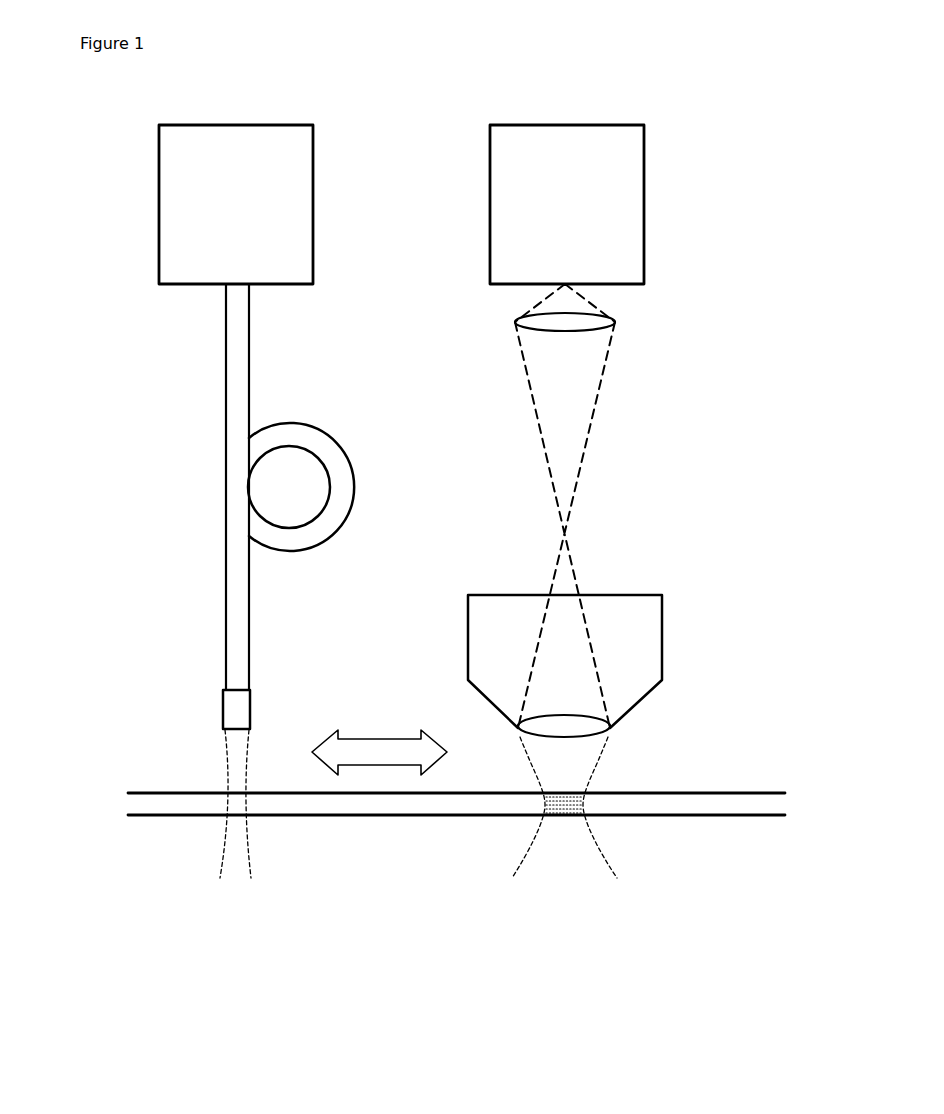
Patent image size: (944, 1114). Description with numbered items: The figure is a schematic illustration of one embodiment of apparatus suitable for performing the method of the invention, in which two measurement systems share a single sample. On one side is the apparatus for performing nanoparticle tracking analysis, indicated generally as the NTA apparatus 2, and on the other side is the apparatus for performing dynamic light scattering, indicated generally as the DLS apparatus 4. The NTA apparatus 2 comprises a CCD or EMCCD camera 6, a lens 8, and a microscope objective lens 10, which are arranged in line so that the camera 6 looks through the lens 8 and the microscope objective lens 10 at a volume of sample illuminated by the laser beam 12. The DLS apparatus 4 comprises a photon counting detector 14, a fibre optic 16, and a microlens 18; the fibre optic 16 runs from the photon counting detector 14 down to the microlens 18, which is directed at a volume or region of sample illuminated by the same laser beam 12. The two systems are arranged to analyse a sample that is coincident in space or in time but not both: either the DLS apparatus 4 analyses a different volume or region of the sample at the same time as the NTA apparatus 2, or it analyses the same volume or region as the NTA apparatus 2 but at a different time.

The NTA apparatus 2 is at (588, 108).
The DLS apparatus 4 is at (248, 108).
The CCD or EMCCD camera 6 is at (648, 210).
The lens 8 is at (623, 323).
The microscope objective lens 10 is at (665, 665).
The laser beam 12 is at (635, 820).
The photon counting detector 14 is at (158, 196).
The fibre optic 16 is at (222, 515).
The microlens 18 is at (220, 709).